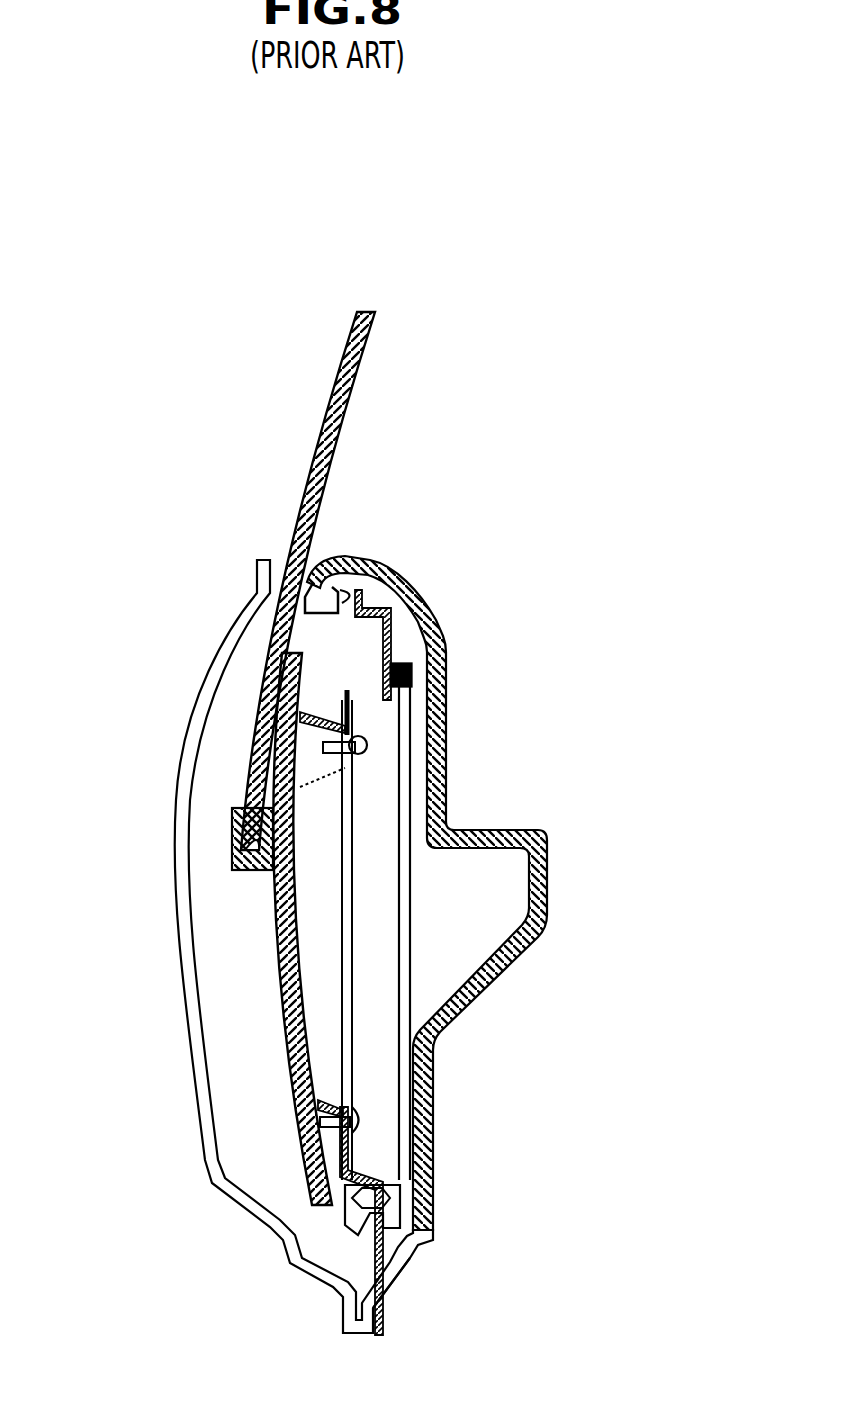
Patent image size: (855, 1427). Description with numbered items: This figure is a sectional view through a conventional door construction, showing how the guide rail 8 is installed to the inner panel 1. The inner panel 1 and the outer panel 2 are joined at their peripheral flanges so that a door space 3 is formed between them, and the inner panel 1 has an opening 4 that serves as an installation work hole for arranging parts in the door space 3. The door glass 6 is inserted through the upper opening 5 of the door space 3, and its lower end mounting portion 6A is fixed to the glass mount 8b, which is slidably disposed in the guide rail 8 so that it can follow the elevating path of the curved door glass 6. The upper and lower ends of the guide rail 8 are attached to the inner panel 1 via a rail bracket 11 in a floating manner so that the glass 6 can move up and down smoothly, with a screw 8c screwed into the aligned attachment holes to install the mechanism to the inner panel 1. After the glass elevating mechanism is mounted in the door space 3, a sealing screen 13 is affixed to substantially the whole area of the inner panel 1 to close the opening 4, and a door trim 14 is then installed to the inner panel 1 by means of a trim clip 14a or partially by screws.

The inner panel 1 is at (400, 1263).
The outer panel 2 is at (178, 930).
The door space 3 is at (260, 946).
The opening 4 is at (355, 823).
The upper opening 5 is at (266, 532).
The door glass 6 is at (337, 425).
The lower end mounting portion 6A is at (237, 847).
The guide rail 8 is at (282, 995).
The glass mount 8b is at (237, 817).
The screw 8c is at (362, 742).
The rail bracket 11 is at (320, 700).
The sealing screen 13 is at (403, 930).
The door trim 14 is at (537, 940).
The trim clip 14a is at (413, 1240).